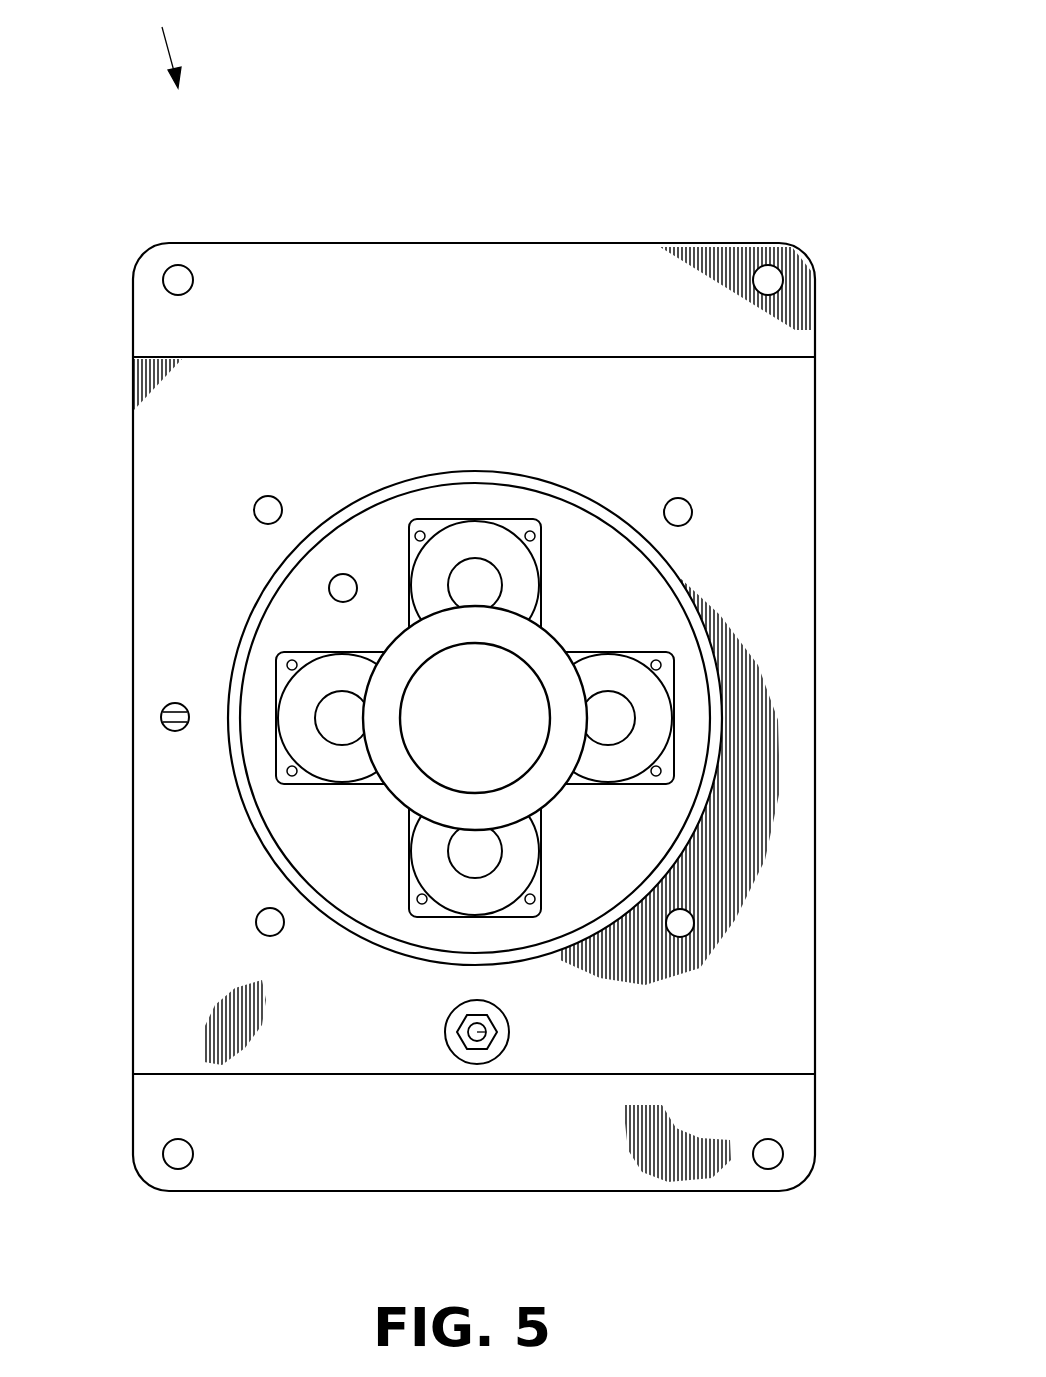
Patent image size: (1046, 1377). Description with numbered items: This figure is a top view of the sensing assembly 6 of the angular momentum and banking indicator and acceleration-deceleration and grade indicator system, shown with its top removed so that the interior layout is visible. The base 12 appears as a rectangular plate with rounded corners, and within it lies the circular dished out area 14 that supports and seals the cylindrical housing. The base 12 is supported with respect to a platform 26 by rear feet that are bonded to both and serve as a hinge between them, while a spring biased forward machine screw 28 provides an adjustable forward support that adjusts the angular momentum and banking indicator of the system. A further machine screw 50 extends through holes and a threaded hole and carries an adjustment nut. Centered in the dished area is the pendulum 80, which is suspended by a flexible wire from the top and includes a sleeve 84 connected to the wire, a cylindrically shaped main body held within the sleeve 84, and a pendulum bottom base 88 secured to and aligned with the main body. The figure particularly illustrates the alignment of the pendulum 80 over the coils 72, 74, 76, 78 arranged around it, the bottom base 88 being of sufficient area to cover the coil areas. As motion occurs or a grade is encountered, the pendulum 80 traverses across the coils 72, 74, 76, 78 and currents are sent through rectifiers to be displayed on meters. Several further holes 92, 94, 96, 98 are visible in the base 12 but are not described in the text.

The sensing assembly 6 is at (163, 44).
The base 12 is at (431, 717).
The circular dished out area 14 is at (343, 609).
The platform 26 is at (736, 256).
The forward machine screw 28 is at (512, 1032).
The machine screw 50 is at (124, 702).
The coil 72 is at (430, 890).
The coil 74 is at (718, 748).
The coil 76 is at (515, 534).
The coil 78 is at (284, 700).
The pendulum 80 is at (497, 724).
The sleeve 84 is at (475, 718).
The pendulum bottom base 88 is at (497, 716).
The mounting hole 92 is at (237, 931).
The mounting hole 94 is at (235, 491).
The mounting hole 96 is at (719, 942).
The mounting hole 98 is at (716, 495).